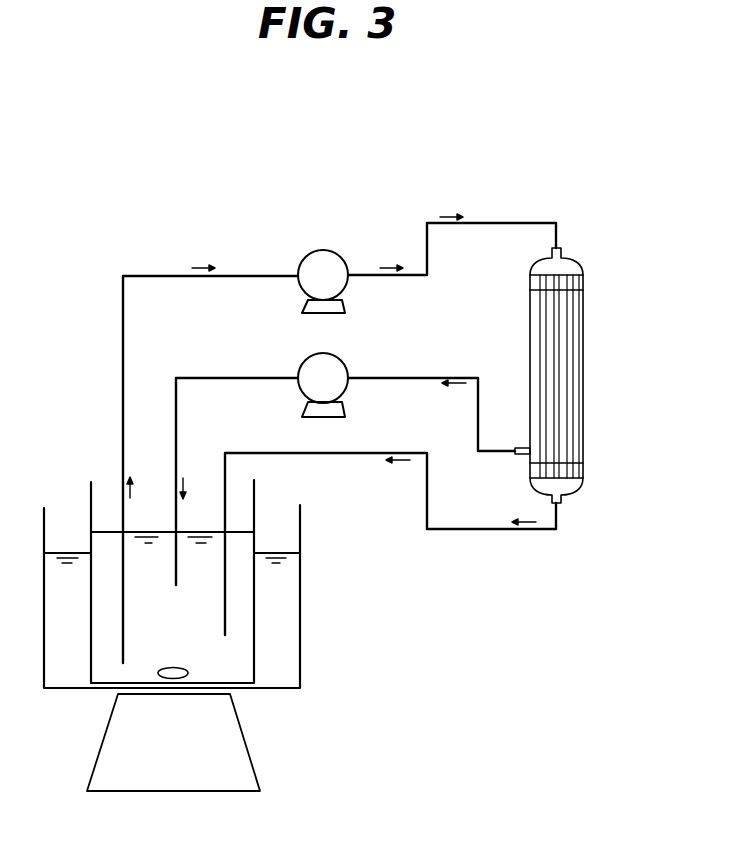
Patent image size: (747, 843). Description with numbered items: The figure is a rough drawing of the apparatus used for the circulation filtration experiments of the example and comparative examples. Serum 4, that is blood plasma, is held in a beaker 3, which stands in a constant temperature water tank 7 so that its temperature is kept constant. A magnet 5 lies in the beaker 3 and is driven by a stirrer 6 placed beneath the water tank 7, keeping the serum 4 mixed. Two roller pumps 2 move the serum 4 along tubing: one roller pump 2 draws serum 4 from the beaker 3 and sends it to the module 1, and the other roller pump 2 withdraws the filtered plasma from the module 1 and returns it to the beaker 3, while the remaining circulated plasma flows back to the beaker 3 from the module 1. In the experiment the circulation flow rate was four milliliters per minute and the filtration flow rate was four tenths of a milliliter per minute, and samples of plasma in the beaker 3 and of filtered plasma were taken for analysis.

The module 1 is at (583, 370).
The roller pump 2 is at (342, 253).
The beaker 3 is at (254, 607).
The serum 4 is at (236, 648).
The magnet 5 is at (189, 672).
The stirrer 6 is at (255, 765).
The constant temperature water tank 7 is at (299, 542).